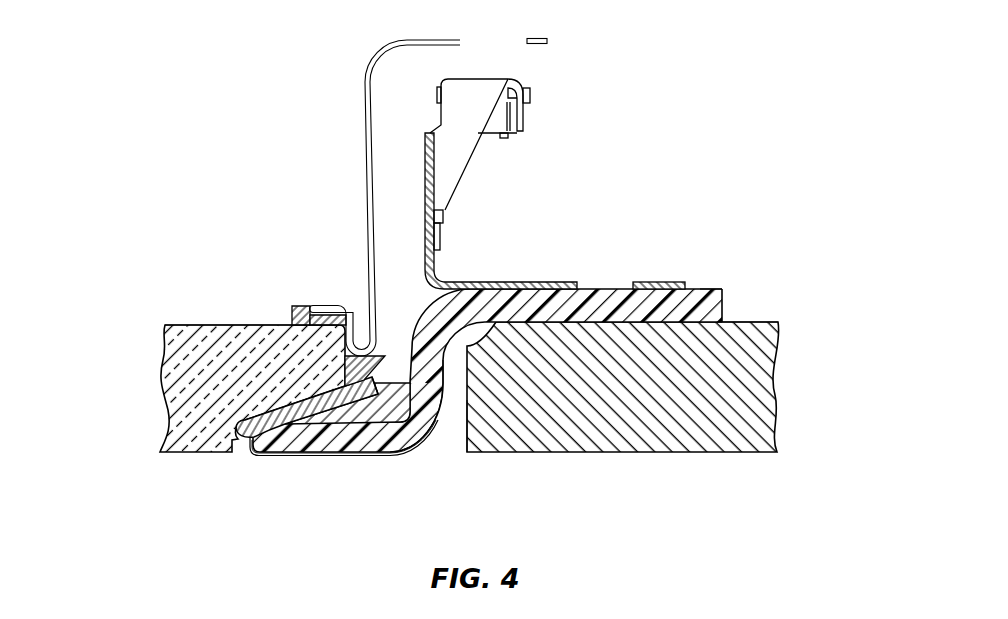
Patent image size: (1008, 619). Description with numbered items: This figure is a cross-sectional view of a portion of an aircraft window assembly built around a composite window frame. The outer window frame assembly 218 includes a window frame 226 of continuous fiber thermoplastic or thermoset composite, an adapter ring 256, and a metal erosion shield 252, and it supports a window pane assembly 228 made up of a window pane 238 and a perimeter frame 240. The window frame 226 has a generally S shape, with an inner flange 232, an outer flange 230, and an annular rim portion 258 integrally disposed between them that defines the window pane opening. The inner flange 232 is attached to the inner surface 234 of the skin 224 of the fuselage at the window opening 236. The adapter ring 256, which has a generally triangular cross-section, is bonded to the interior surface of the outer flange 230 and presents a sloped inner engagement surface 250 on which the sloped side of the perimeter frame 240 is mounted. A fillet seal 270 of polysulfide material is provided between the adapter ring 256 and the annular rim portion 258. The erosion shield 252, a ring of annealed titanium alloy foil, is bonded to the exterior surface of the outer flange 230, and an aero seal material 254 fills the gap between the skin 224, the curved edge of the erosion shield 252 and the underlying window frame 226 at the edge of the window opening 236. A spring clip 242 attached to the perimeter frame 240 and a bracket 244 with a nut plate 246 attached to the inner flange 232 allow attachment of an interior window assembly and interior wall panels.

The outer window frame assembly 218 is at (792, 219).
The skin 224 is at (750, 396).
The window frame 226 is at (612, 284).
The window pane assembly 228 is at (161, 278).
The outer flange 230 is at (325, 453).
The inner flange 232 is at (713, 302).
The inner surface of the skin 234 is at (743, 315).
The window opening 236 is at (459, 430).
The window pane 238 is at (193, 385).
The perimeter frame 240 is at (305, 305).
The spring clip 242 is at (363, 105).
The bracket 244 is at (490, 283).
The nut plate 246 is at (524, 117).
The sloped inner engagement surface 250 is at (306, 396).
The metal erosion shield 252 is at (267, 455).
The aero seal material 254 is at (444, 427).
The adapter ring 256 is at (363, 420).
The annular rim portion 258 is at (430, 370).
The fillet seal 270 is at (396, 383).